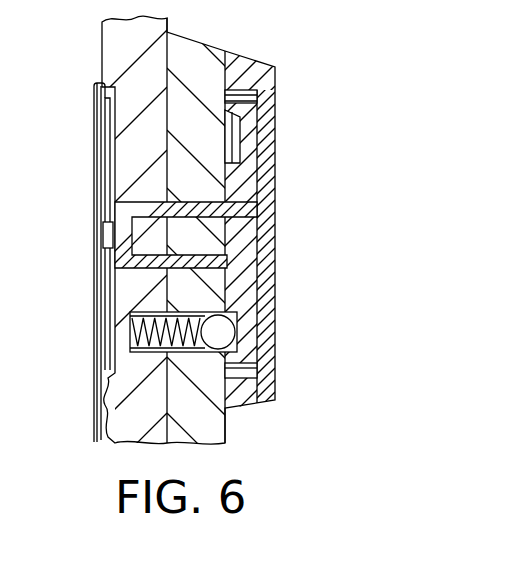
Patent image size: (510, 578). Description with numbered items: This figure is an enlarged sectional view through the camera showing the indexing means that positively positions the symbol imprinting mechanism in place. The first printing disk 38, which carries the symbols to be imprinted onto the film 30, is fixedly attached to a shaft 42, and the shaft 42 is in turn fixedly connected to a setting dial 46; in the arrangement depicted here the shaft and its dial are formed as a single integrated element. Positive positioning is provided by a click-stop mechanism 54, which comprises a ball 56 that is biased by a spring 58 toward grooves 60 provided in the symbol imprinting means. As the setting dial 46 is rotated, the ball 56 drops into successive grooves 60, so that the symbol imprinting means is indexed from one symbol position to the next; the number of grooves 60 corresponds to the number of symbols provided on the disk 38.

The film 30 is at (78, 131).
The first printing disk 38 is at (97, 120).
The shaft 42 is at (120, 207).
The setting dial 46 is at (247, 112).
The click-stop mechanism 54 is at (203, 370).
The ball 56 is at (225, 325).
The spring 58 is at (127, 343).
The grooves 60 is at (232, 145).